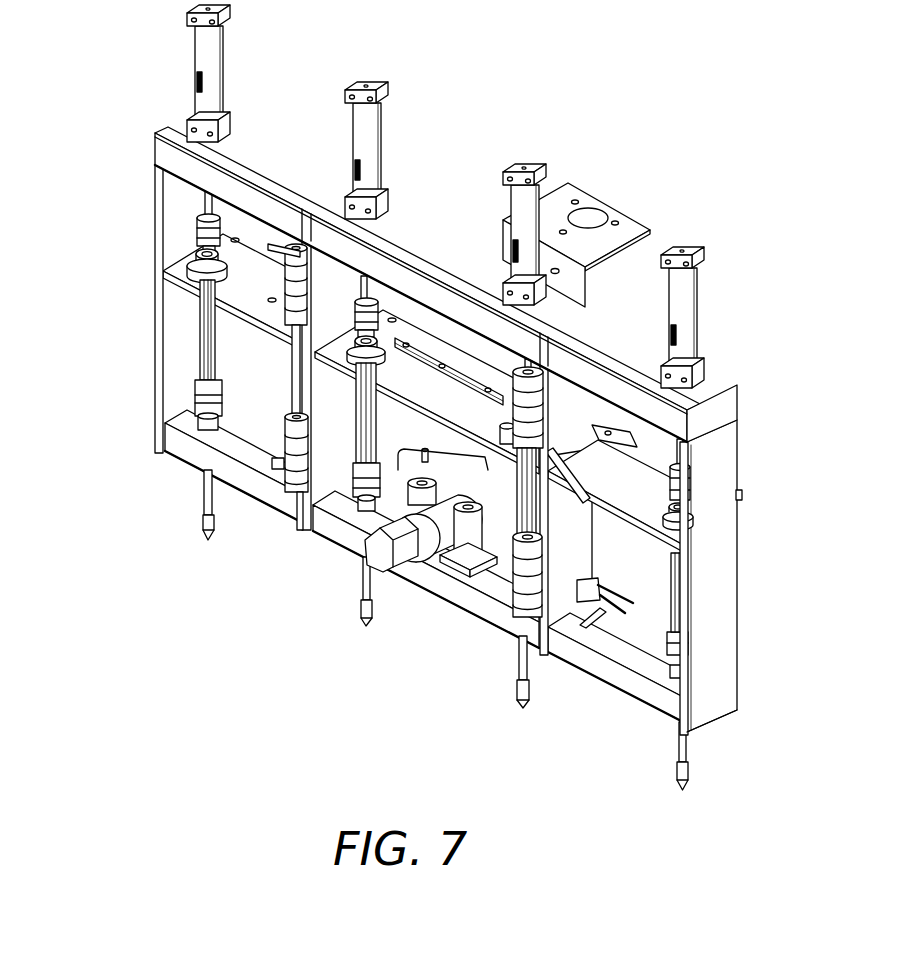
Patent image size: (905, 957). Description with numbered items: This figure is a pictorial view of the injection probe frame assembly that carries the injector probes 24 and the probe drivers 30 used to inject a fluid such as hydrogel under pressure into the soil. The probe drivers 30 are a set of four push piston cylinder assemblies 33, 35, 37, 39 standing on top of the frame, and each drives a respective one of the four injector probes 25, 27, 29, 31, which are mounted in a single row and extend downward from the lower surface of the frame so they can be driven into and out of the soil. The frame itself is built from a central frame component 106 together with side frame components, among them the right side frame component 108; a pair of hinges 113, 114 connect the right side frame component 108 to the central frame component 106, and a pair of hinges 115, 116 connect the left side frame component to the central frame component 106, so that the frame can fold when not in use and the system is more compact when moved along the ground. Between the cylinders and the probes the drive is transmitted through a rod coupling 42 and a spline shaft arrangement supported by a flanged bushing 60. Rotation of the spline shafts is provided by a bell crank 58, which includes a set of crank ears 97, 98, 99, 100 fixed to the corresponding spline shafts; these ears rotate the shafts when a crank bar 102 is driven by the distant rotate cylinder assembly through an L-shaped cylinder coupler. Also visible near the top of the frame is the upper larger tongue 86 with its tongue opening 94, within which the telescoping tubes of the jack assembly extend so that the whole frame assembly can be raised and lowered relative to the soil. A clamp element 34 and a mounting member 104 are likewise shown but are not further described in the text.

The probe drivers 30 is at (440, 399).
The piston cylinder assembly 39 is at (260, 71).
The piston cylinder assembly 37 is at (410, 150).
The piston cylinder assembly 35 is at (589, 213).
The piston cylinder assembly 33 is at (736, 313).
The central frame component 106 is at (292, 243).
The second frame module 104 is at (443, 361).
The right side frame component 108 is at (692, 576).
The crank bar 102 is at (489, 262).
The tongue opening 94 is at (620, 211).
The upper larger tongue 86 is at (635, 245).
The hinge 113 is at (631, 332).
The crank ear 100 is at (230, 268).
The crank ear 99 is at (427, 375).
The crank ear 98 is at (478, 419).
The crank ear 97 is at (616, 489).
The hinge 115 is at (202, 320).
The hinge 116 is at (213, 467).
The hinge 114 is at (426, 549).
The bell crank 58 is at (749, 476).
The rod coupling 42 is at (746, 530).
The clamp knob 34 is at (422, 575).
The flanged bushing 60 is at (608, 681).
The probe 31 is at (165, 508).
The probe 29 is at (315, 591).
The probe 27 is at (471, 674).
The probe 25 is at (622, 760).
The injector probes 24 is at (754, 775).